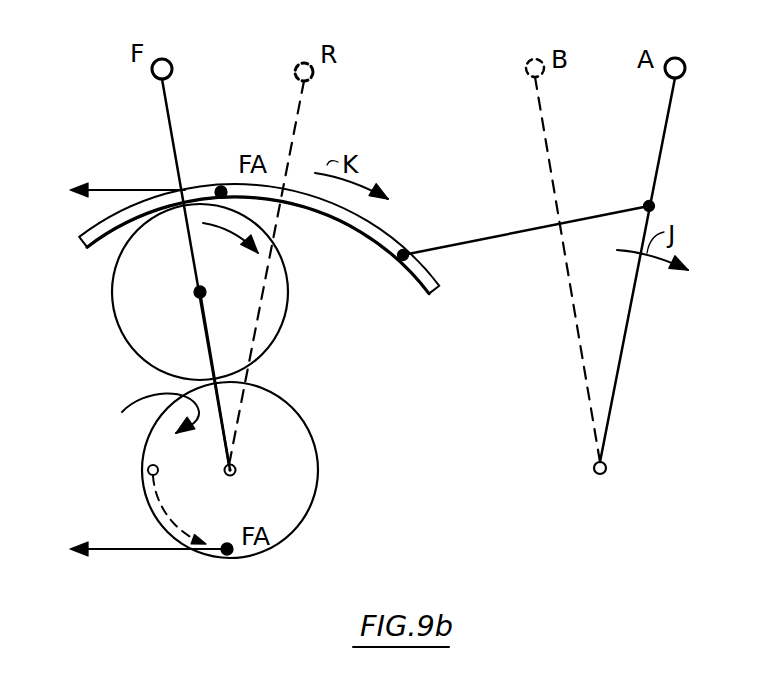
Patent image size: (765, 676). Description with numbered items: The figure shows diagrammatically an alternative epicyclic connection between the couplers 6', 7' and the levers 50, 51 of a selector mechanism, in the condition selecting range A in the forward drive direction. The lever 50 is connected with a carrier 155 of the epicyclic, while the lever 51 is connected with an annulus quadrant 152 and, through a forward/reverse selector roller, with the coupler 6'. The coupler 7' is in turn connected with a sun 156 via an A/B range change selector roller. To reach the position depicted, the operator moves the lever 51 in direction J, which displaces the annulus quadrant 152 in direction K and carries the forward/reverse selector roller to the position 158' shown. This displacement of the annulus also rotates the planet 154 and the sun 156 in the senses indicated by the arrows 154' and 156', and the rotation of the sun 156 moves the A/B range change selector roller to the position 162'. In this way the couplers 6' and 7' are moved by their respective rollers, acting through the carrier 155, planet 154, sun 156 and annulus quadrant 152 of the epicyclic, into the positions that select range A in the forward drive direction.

The lever 50 is at (167, 101).
The lever 51 is at (658, 152).
The coupler 6' is at (127, 177).
The coupler 7' is at (146, 536).
The annulus quadrant 152 is at (420, 300).
The planet 154 is at (153, 292).
The arrow indicating sense of rotation of planet 154' is at (280, 272).
The carrier 155 is at (197, 347).
The sun 156 is at (275, 470).
The arrow indicating sense of rotation of sun 156' is at (146, 419).
The displaced position of forward/reverse selector roller 158' is at (222, 146).
The displaced position of A/B range change selector roller 162' is at (250, 577).